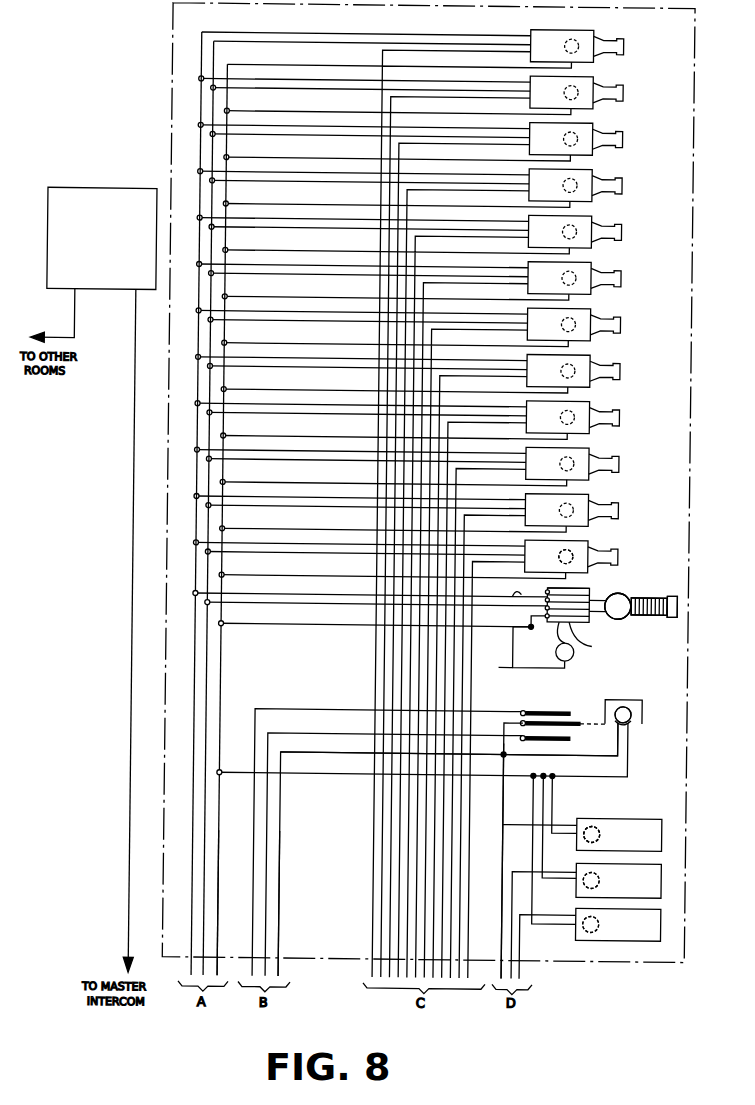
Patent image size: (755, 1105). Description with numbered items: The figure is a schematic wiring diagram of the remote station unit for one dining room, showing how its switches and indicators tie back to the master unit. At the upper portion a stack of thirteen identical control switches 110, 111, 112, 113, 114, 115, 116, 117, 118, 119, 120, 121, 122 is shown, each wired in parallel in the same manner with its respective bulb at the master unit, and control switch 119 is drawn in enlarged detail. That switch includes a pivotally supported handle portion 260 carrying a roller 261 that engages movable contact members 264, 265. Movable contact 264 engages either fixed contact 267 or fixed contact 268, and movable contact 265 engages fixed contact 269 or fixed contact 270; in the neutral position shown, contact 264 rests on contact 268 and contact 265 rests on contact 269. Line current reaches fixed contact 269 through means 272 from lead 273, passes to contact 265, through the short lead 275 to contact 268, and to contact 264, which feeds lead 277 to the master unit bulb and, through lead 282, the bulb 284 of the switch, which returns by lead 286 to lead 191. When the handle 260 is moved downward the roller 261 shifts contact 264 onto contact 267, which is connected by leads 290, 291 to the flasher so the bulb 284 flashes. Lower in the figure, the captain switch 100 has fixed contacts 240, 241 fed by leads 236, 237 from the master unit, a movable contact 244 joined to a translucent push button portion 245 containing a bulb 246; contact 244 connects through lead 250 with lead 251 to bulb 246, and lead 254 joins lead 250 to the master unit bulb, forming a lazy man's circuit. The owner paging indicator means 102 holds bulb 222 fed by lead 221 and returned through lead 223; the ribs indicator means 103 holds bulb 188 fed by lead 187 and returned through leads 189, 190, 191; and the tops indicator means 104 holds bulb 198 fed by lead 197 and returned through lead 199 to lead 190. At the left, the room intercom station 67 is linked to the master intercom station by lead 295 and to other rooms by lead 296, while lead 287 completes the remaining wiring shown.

The room intercom station 67 is at (84, 189).
The captain switch 100 is at (632, 694).
The owner paging indicator means 102 is at (672, 835).
The ribs indicator means 103 is at (672, 881).
The tops indicator means 104 is at (672, 925).
The control switch 110 is at (436, 494).
The control switch 111 is at (435, 517).
The control switch 112 is at (435, 541).
The control switch 113 is at (435, 564).
The control switch 114 is at (435, 588).
The control switch 115 is at (434, 610).
The control switch 116 is at (434, 633).
The control switch 117 is at (429, 657).
The control switch 118 is at (429, 680).
The control switch 119 is at (685, 601).
The control switch 120 is at (429, 704).
The control switch 121 is at (428, 726).
The control switch 122 is at (421, 749).
The lead 187 is at (528, 868).
The bulb 188 is at (595, 874).
The lead 189 is at (554, 778).
The lead 190 is at (352, 782).
The lead 191 is at (238, 890).
The lead 197 is at (528, 948).
The bulb 198 is at (598, 944).
The lead 199 is at (536, 892).
The lead 221 is at (509, 836).
The bulb 222 is at (592, 834).
The lead 223 is at (619, 806).
The lead 236 is at (287, 707).
The lead 237 is at (307, 730).
The fixed contact 240 is at (552, 708).
The fixed contact 241 is at (576, 737).
The movable contact 244 is at (582, 716).
The translucent push button portion 245 is at (639, 711).
The bulb 246 is at (636, 722).
The lead 250 is at (512, 762).
The lead 251 is at (636, 770).
The lead 254 is at (291, 752).
The handle portion 260 is at (646, 594).
The roller 261 is at (630, 592).
The movable contact member 264 is at (592, 584).
The movable contact member 265 is at (638, 612).
The fixed contact 267 is at (553, 586).
The fixed contact 268 is at (595, 592).
The fixed contact 269 is at (580, 622).
The fixed contact 270 is at (583, 625).
The connecting means 272 is at (270, 594).
The lead 273 is at (201, 697).
The short lead 275 is at (532, 628).
The lead 277 is at (512, 626).
The lead 282 is at (539, 648).
The bulb 284 is at (580, 655).
The lead 286 is at (515, 664).
The conductor 287 is at (230, 660).
The lead 290 is at (330, 603).
The lead 291 is at (214, 712).
The lead 295 is at (136, 630).
The lead 296 is at (77, 302).